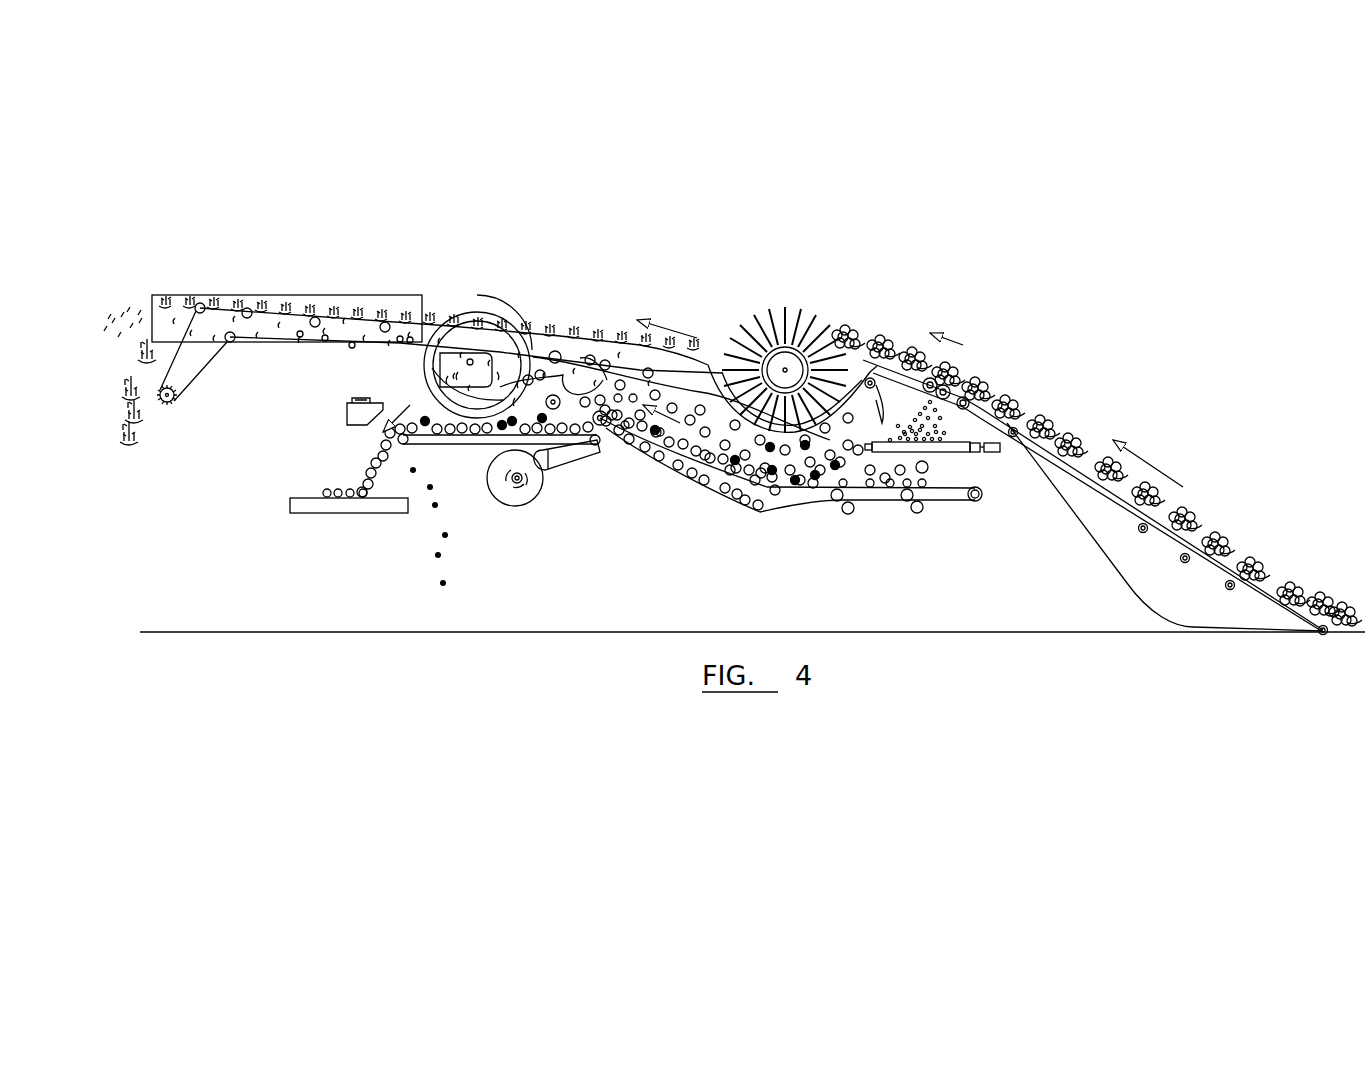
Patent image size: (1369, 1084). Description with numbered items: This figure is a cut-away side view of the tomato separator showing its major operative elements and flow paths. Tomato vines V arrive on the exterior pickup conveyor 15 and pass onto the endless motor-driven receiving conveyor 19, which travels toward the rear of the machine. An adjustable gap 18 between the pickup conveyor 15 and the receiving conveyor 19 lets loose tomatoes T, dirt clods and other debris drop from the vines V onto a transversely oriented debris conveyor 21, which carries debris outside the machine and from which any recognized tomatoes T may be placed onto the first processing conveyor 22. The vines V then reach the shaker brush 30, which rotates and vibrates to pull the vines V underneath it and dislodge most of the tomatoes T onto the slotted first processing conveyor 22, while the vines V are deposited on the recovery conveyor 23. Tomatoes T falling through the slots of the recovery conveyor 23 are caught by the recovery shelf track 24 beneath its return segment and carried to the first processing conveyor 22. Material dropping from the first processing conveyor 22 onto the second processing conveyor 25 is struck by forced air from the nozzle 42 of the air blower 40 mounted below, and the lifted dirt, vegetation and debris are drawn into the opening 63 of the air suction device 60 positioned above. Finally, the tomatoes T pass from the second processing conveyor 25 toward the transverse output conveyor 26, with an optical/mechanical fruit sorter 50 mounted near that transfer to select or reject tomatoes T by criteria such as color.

The pickup conveyor 15 is at (1162, 487).
The adjustable gap 18 is at (1013, 363).
The receiving conveyor 19 is at (912, 349).
The debris conveyor 21 is at (949, 473).
The first processing conveyor 22 is at (799, 483).
The recovery conveyor 23 is at (440, 313).
The recovery shelf track 24 is at (385, 370).
The second processing conveyor 25 is at (478, 479).
The output conveyor 26 is at (306, 513).
The shaker brush 30 is at (807, 347).
The air blower 40 is at (538, 493).
The nozzle 42 is at (577, 475).
The optical/mechanical fruit sorter 50 is at (310, 423).
The air suction device 60 is at (515, 325).
The opening 63 is at (665, 357).
The tomatoes T is at (766, 498).
The tomato vines V is at (1234, 506).